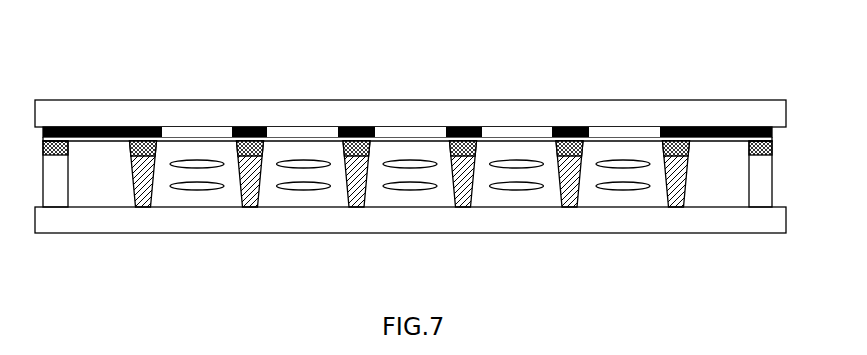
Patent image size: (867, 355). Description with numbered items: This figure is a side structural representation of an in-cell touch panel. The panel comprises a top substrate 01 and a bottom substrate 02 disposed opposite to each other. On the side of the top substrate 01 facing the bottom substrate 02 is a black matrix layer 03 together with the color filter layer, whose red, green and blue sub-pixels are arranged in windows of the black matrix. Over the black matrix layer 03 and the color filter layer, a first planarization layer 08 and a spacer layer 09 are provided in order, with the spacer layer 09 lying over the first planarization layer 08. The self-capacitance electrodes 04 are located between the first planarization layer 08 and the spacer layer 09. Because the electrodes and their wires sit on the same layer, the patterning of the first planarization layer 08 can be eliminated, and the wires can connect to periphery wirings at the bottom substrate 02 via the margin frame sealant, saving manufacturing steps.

The top substrate 01 is at (108, 107).
The bottom substrate 02 is at (167, 223).
The black matrix layer 03 is at (255, 127).
The self-capacitance electrodes 04 is at (357, 145).
The first planarization layer 08 is at (638, 143).
The spacer layer 09 is at (463, 197).